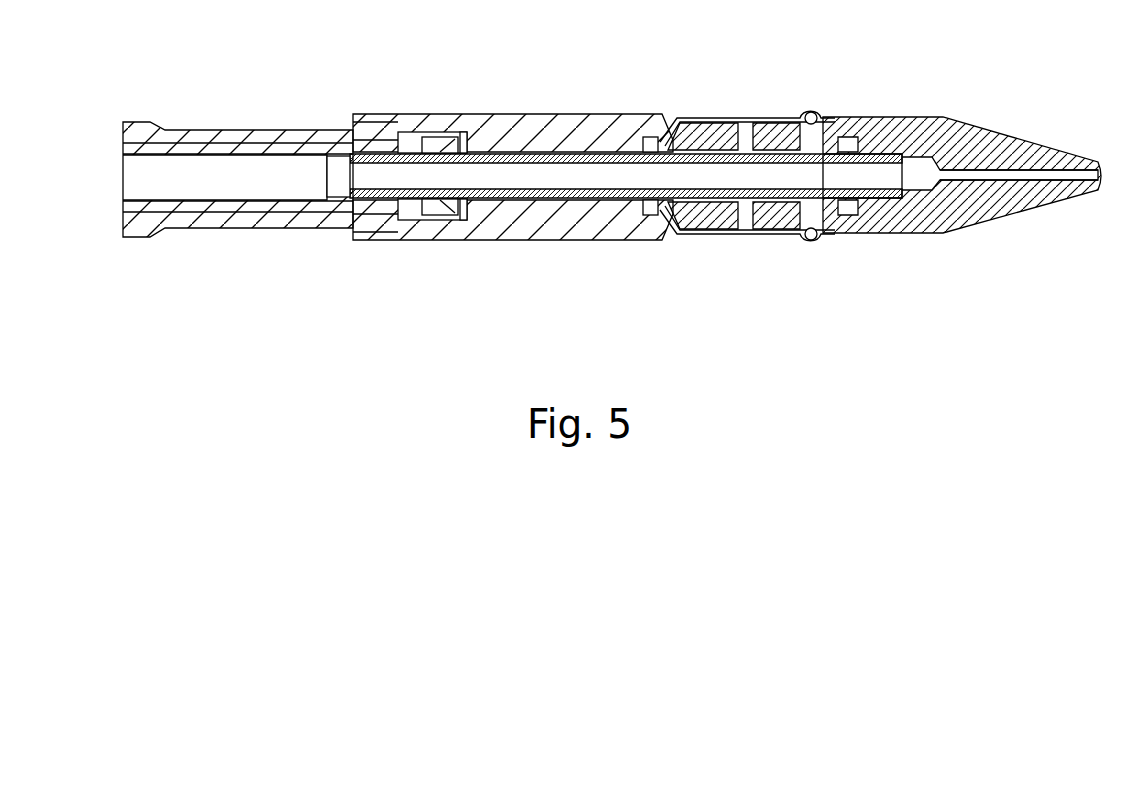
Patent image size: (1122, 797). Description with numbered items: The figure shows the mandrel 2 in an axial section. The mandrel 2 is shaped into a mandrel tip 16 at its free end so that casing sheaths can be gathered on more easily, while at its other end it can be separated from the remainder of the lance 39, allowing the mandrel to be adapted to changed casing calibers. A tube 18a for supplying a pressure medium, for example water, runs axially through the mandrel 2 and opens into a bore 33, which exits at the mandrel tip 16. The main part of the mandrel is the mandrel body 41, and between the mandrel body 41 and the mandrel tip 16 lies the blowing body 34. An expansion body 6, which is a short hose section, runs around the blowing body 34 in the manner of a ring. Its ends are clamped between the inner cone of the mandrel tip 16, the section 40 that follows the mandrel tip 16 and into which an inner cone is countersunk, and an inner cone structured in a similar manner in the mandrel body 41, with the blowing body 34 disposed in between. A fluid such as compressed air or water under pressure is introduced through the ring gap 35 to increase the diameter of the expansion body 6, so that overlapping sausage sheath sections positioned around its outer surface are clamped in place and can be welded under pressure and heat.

The mandrel 2 is at (685, 88).
The expansion body 6 is at (773, 117).
The mandrel tip 16 is at (963, 234).
The tube 18a is at (617, 200).
The bore 33 is at (1003, 177).
The blowing body 34 is at (723, 220).
The ring gap 35 is at (526, 148).
The lance 39 is at (275, 218).
The section 40 is at (827, 117).
The mandrel body 41 is at (512, 240).